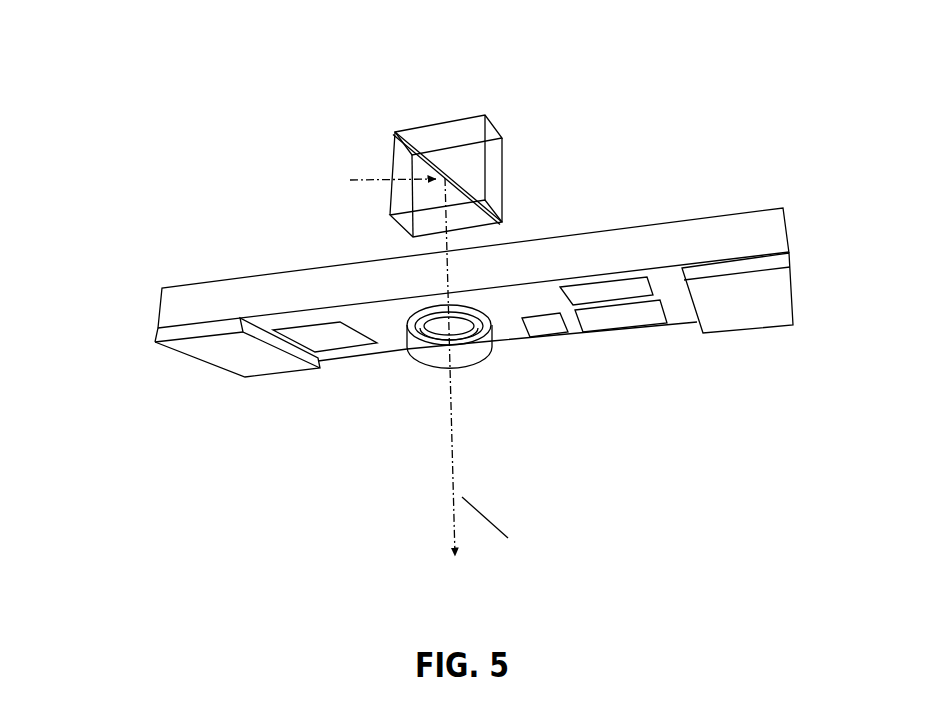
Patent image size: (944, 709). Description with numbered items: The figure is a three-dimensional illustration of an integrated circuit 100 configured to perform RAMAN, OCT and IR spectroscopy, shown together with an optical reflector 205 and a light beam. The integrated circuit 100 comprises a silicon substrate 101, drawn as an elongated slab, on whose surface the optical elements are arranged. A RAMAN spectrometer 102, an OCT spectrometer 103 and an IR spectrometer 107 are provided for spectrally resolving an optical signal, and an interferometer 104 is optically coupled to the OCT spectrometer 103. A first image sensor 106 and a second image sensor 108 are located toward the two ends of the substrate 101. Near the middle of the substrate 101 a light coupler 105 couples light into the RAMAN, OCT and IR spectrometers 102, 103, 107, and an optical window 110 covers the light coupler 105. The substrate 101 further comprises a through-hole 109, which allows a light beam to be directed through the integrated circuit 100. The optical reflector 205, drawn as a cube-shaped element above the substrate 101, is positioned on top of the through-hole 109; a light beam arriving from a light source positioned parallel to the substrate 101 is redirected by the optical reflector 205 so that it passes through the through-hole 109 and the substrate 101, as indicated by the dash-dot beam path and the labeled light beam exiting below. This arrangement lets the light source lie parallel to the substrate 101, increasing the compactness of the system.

The integrated circuit 100 is at (142, 100).
The silicon substrate 101 is at (155, 305).
The RAMAN spectrometer 102 is at (606, 291).
The OCT spectrometer 103 is at (617, 318).
The interferometer 104 is at (548, 326).
The light coupler 105 is at (425, 315).
The first image sensor 106 is at (782, 302).
The IR spectrometer 107 is at (337, 339).
The second image sensor 108 is at (228, 358).
The through-hole 109 is at (467, 317).
The optical window 110 is at (483, 362).
The optical reflector 205 is at (498, 126).